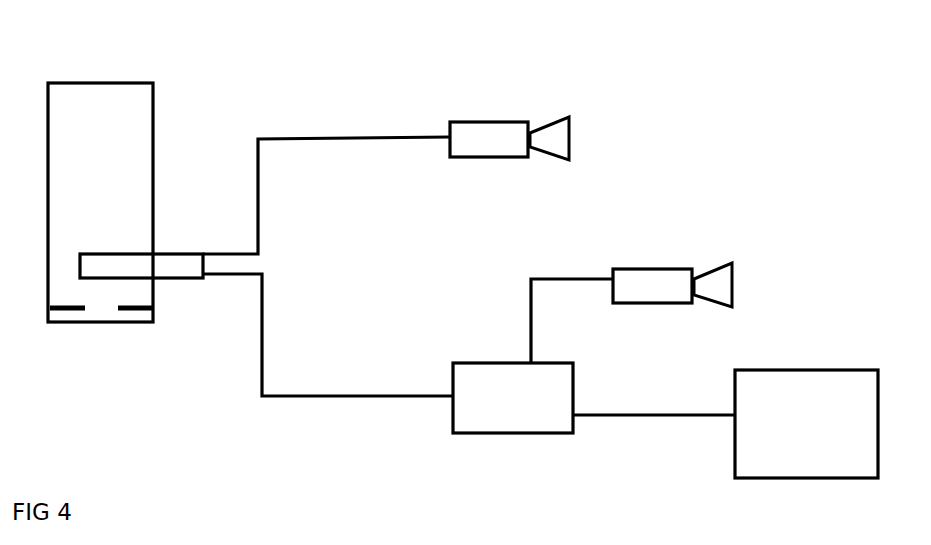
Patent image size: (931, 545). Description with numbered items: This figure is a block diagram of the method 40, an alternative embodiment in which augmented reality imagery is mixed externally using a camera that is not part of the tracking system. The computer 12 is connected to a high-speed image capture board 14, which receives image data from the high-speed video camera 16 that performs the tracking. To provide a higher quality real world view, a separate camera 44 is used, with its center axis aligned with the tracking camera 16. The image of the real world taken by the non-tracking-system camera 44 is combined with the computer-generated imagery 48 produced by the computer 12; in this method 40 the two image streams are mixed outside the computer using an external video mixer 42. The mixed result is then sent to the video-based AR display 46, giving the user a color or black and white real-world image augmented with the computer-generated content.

The computer 12 is at (145, 73).
The high-speed image capture board 14 is at (163, 247).
The high-speed video camera 16 is at (500, 112).
The method 40 is at (343, 84).
The external video mixer 42 is at (582, 376).
The camera 44 is at (662, 257).
The video-based AR display 46 is at (817, 362).
The computer-generated imagery 48 is at (268, 317).